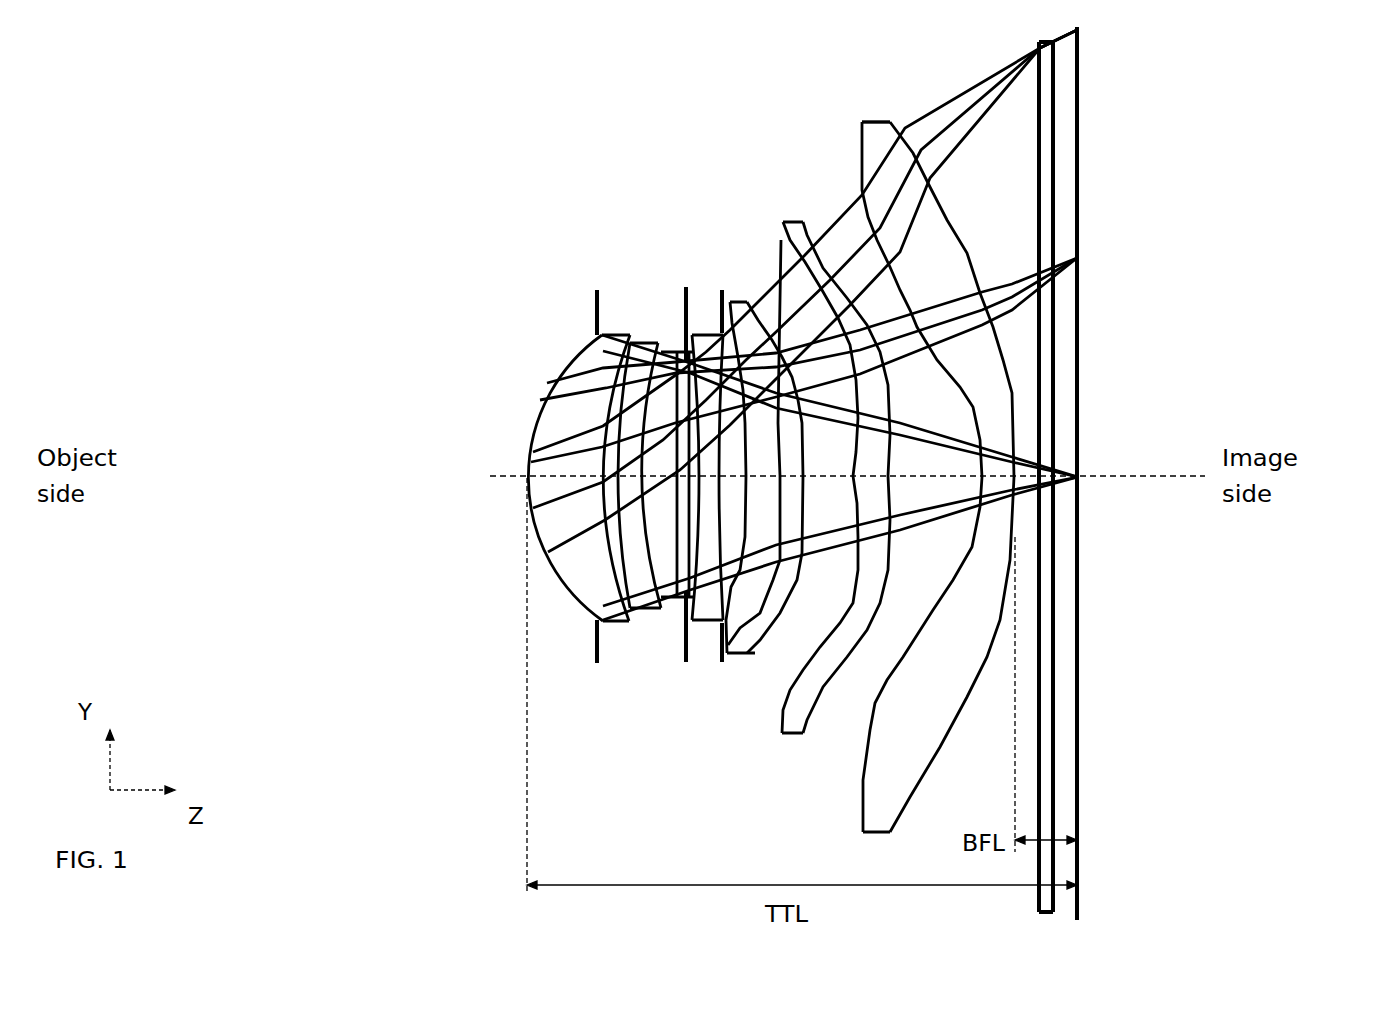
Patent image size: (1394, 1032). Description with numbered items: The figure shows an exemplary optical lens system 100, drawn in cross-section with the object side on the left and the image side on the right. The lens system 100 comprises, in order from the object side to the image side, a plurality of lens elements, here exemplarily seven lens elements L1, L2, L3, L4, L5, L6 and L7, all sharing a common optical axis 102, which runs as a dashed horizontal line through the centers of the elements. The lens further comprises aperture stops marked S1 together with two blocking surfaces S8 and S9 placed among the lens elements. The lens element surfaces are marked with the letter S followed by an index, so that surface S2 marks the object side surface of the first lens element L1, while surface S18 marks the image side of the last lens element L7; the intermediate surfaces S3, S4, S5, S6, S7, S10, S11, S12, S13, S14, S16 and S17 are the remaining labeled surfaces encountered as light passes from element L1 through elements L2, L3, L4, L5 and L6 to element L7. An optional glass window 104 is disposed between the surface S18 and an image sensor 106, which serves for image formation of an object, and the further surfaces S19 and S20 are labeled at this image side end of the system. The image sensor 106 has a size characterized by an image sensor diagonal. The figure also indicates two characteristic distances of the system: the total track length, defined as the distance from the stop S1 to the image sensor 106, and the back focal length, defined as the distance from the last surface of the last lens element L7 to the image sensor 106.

The optical lens system 100 is at (549, 63).
The optical axis 102 is at (1128, 473).
The glass window 104 is at (1172, 473).
The image sensor 106 is at (1080, 640).
The first lens element L1 is at (571, 412).
The second lens element L2 is at (604, 568).
The third lens element L3 is at (670, 548).
The fourth lens element L4 is at (687, 352).
The fifth lens element L5 is at (756, 495).
The sixth lens element L6 is at (821, 465).
The seventh lens element L7 is at (908, 434).
The aperture stop S1 is at (597, 293).
The object side surface of first lens element S2 is at (582, 352).
The lens element surface S3 is at (629, 330).
The lens element surface S4 is at (627, 640).
The lens element surface S5 is at (655, 640).
The lens element surface S6 is at (665, 640).
The lens element surface S7 is at (682, 640).
The blocking surface S8 is at (685, 290).
The blocking surface S9 is at (693, 330).
The lens element surface S10 is at (716, 330).
The lens element surface S11 is at (723, 290).
The lens element surface S12 is at (720, 640).
The lens element surface S13 is at (733, 655).
The lens element surface S14 is at (753, 655).
The lens element surface S16 is at (862, 215).
The lens element surface S17 is at (878, 122).
The image side surface of lens element L7 S18 is at (900, 120).
The surface S19 is at (1042, 820).
The surface S20 is at (1056, 835).